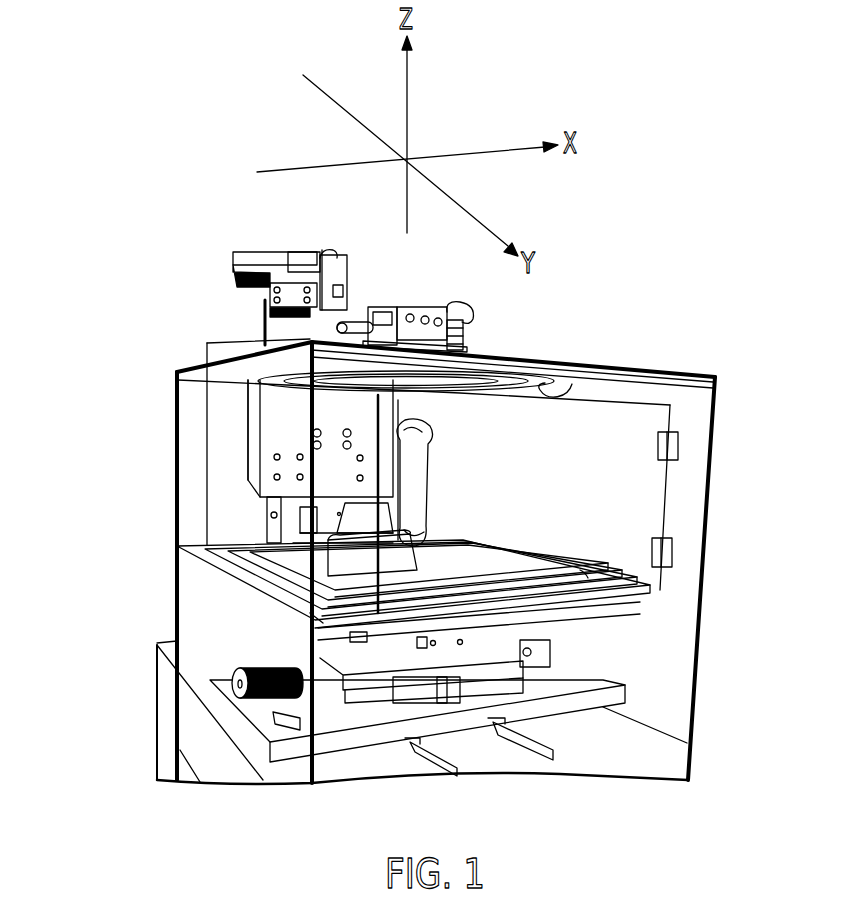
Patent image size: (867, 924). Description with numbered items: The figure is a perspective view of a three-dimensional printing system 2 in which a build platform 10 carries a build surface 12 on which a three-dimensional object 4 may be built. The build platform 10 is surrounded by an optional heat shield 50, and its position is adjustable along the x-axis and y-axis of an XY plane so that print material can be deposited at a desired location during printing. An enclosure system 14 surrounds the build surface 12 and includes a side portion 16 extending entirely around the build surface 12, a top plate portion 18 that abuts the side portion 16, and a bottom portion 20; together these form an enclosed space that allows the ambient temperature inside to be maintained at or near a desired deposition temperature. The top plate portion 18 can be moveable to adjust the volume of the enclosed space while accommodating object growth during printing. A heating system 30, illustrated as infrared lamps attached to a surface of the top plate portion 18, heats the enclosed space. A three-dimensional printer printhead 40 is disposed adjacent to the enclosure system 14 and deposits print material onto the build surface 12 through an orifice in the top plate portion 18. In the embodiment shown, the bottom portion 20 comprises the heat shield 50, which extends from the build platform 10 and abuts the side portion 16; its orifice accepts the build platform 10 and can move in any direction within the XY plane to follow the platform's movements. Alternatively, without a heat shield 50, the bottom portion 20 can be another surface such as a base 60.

The three-dimensional printing system 2 is at (118, 375).
The three-dimensional object 4 is at (342, 552).
The build platform 10 is at (423, 563).
The build surface 12 is at (413, 563).
The enclosure system 14 is at (674, 356).
The side portion 16 is at (183, 507).
The top plate portion 18 is at (613, 363).
The bottom portion 20 is at (655, 595).
The heating system 30 is at (572, 384).
The 3D printer printhead 40 is at (431, 309).
The heat shield 50 is at (588, 578).
The base 60 is at (685, 758).